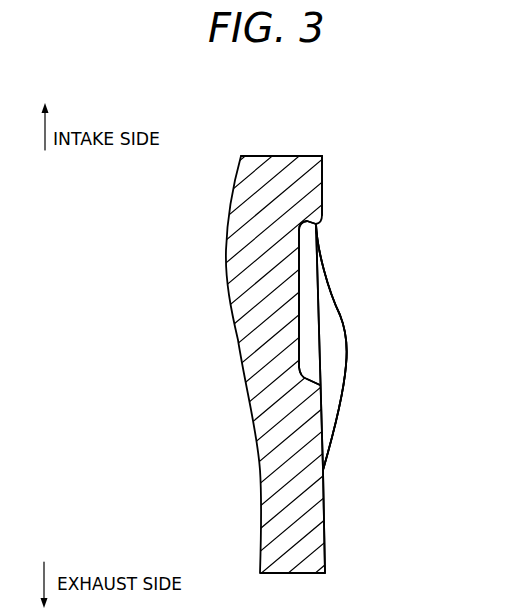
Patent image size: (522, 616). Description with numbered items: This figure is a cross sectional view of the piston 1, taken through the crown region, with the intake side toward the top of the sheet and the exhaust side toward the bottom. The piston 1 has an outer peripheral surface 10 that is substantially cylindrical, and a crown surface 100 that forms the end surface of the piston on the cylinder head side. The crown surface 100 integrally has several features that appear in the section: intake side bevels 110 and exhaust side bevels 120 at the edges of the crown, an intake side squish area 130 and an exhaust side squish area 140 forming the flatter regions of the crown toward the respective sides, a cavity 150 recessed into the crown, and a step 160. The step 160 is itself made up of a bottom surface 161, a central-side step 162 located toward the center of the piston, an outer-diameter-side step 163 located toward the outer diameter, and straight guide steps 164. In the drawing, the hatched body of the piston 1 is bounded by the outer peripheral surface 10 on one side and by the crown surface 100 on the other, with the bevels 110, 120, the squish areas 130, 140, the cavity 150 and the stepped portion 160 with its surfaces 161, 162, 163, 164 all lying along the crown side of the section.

The piston 1 is at (202, 136).
The outer peripheral surface 10 is at (283, 156).
The crown surface 100 is at (348, 450).
The intake side bevels 110 is at (340, 334).
The exhaust side bevels 120 is at (340, 408).
The intake side squish area 130 is at (323, 180).
The exhaust side squish area 140 is at (324, 551).
The cavity 150 is at (319, 359).
The step 160 is at (312, 275).
The bottom surface 161 is at (299, 297).
The central-side step 162 is at (305, 378).
The outer-diameter-side step 163 is at (310, 218).
The straight guide steps 164 is at (313, 315).